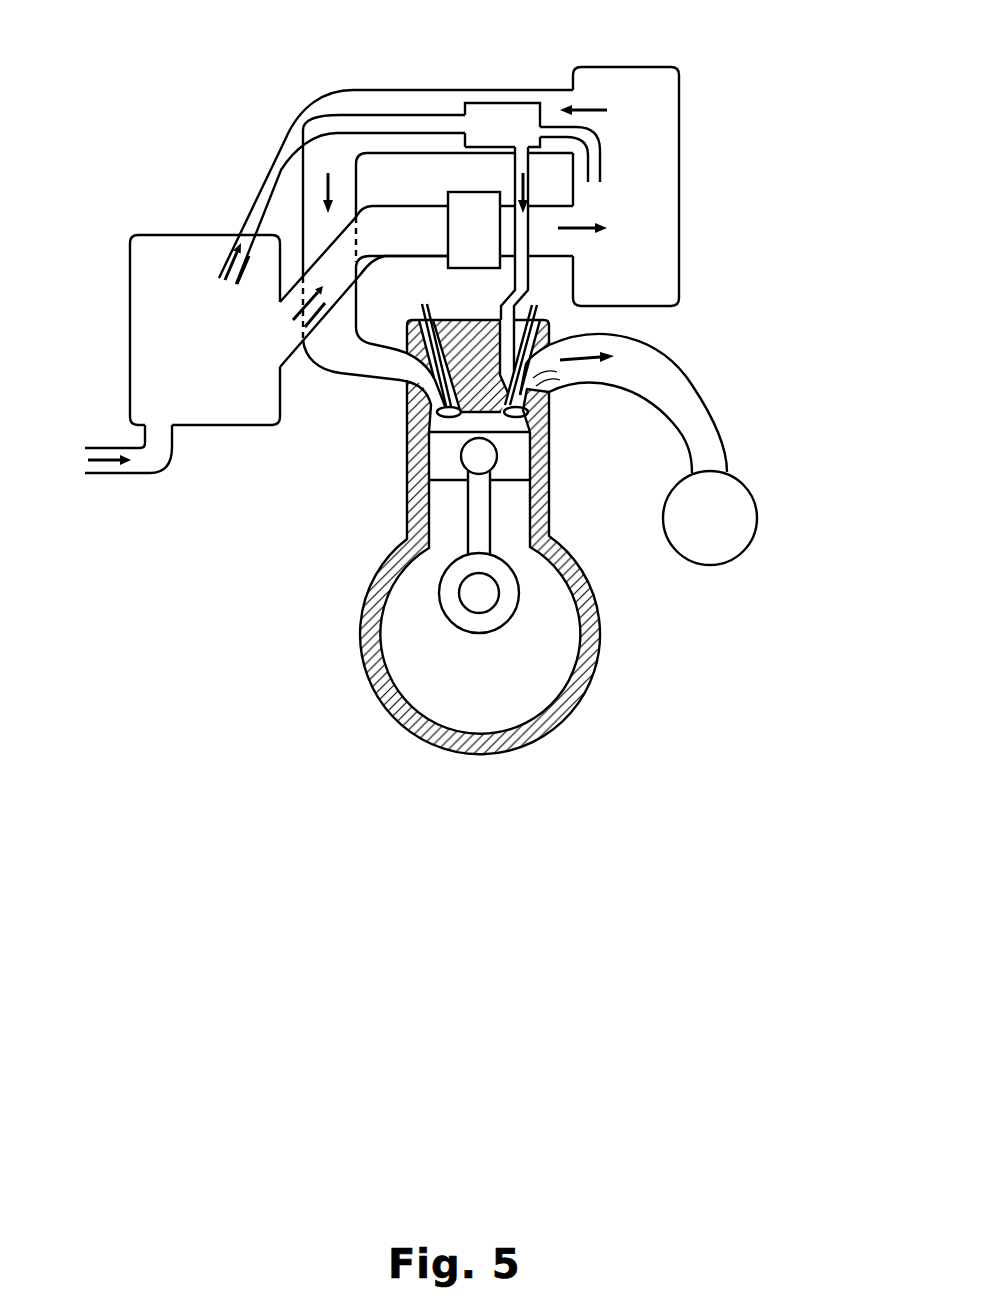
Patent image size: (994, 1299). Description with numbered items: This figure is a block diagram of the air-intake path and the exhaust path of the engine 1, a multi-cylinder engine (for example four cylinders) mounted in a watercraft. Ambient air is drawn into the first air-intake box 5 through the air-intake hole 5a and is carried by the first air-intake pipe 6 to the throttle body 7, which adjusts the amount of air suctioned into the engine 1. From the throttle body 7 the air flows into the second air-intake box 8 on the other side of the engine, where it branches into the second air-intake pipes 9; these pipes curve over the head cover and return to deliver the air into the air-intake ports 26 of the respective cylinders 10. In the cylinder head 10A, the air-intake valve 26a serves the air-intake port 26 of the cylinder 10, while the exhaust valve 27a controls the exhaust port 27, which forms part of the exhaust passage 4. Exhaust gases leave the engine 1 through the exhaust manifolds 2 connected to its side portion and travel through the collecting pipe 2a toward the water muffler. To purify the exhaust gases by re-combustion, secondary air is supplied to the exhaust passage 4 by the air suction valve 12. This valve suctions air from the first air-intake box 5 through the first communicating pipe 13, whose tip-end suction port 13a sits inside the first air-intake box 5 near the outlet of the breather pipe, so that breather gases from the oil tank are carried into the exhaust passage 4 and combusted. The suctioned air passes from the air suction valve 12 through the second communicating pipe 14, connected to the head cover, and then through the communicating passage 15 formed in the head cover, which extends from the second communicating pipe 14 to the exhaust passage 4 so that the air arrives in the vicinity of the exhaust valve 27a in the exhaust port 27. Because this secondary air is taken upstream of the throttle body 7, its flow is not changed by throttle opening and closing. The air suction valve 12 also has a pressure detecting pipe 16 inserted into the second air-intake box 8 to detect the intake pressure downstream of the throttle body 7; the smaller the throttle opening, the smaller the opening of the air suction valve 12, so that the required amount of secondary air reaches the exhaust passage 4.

The engine 1 is at (443, 768).
The exhaust manifolds 2 is at (717, 418).
The collecting pipe 2a is at (720, 567).
The exhaust passage 4 is at (557, 378).
The first air-intake box 5 is at (130, 382).
The air-intake hole 5a is at (85, 473).
The first air-intake pipe 6 is at (467, 192).
The throttle body 7 is at (383, 207).
The second air-intake box 8 is at (683, 300).
The second air-intake pipes 9 is at (428, 90).
The cylinders 10 is at (407, 503).
The cylinder head 10A is at (562, 347).
The air suction valve 12 is at (500, 103).
The first communicating pipe 13 is at (372, 115).
The tip-end suction port 13a is at (220, 278).
The second communicating pipe 14 is at (532, 187).
The communicating passage 15 is at (553, 320).
The pressure detecting pipe 16 is at (600, 147).
The air-intake ports 26 is at (398, 378).
The air-intake valve 26a is at (420, 455).
The exhaust port 27 is at (535, 378).
The exhaust valve 27a is at (522, 407).